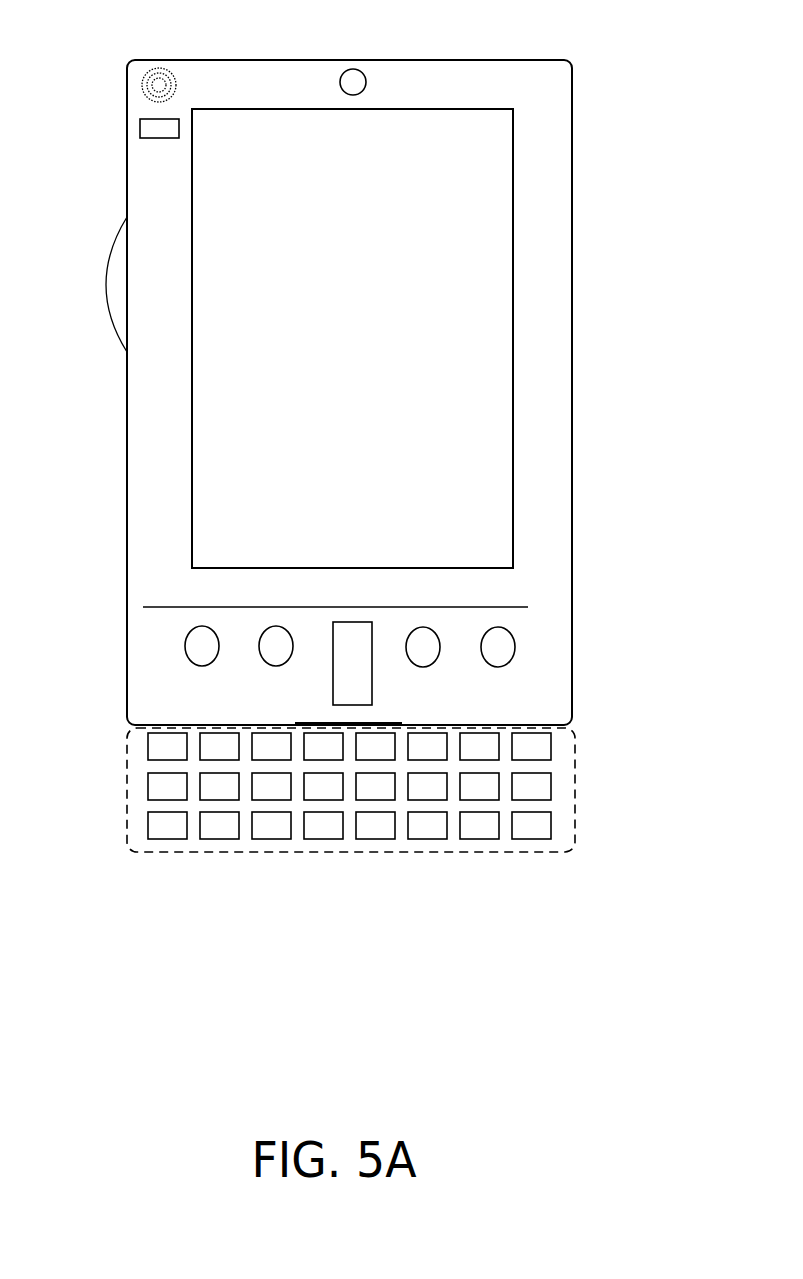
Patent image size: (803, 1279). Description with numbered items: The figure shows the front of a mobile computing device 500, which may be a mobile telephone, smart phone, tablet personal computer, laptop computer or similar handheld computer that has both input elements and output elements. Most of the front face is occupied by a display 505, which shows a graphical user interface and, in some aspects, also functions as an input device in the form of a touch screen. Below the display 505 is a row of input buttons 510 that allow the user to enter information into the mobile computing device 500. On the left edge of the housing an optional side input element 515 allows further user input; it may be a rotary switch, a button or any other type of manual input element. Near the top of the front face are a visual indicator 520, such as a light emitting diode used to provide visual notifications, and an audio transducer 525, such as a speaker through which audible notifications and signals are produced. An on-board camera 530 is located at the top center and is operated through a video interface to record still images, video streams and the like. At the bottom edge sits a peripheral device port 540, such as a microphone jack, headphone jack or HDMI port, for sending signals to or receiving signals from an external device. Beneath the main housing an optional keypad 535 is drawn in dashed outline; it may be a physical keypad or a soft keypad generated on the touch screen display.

The mobile computing device 500 is at (572, 85).
The display 505 is at (217, 421).
The input buttons 510 is at (333, 673).
The side input element 515 is at (106, 270).
The visual indicator 520 is at (140, 126).
The audio transducer 525 is at (142, 79).
The on-board camera 530 is at (347, 69).
The keypad 535 is at (137, 789).
The peripheral device port 540 is at (480, 705).